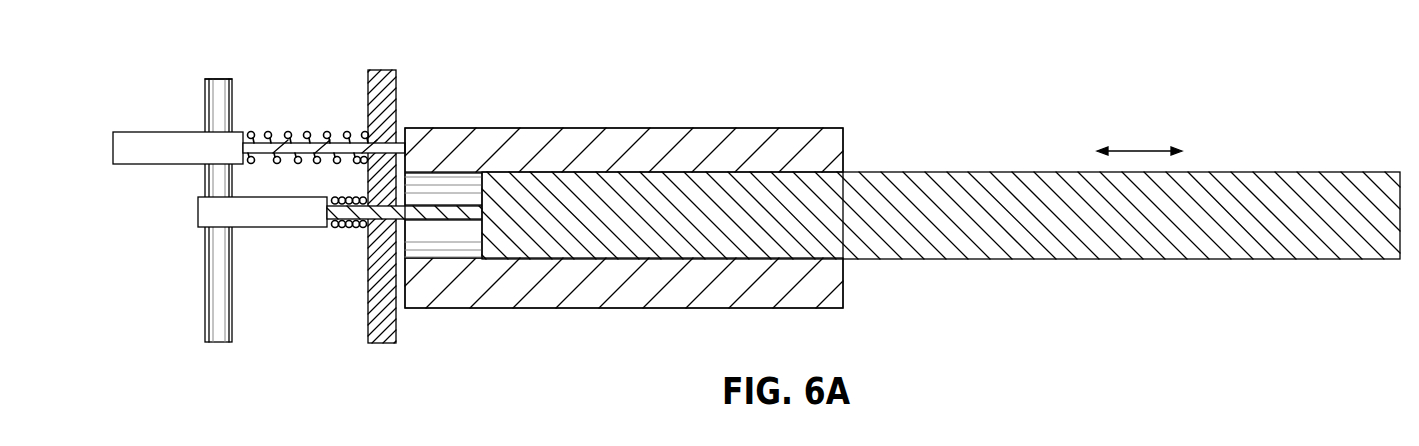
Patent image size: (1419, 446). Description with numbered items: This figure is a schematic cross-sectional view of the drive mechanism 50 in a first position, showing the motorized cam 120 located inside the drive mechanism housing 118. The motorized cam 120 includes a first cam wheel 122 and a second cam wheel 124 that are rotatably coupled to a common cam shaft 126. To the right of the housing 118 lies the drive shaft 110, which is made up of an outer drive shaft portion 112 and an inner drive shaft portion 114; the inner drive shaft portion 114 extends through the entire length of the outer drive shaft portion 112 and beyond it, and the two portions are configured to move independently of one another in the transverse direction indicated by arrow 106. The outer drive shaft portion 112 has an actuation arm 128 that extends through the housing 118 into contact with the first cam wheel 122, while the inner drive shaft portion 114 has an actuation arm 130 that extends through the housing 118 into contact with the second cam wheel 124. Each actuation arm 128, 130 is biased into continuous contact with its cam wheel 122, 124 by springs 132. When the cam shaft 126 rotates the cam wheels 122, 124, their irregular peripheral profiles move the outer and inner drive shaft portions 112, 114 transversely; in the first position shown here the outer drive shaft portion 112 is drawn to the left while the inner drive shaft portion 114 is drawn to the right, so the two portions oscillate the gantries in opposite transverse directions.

The drive mechanism 50 is at (876, 122).
The arrow indicating transverse direction 106 is at (1142, 151).
The drive shaft 110 is at (624, 193).
The outer drive shaft portion 112 is at (705, 135).
The inner drive shaft portion 114 is at (987, 178).
The drive mechanism housing 118 is at (396, 78).
The motorized cam 120 is at (196, 72).
The first cam wheel 122 is at (155, 165).
The second cam wheel 124 is at (272, 229).
The cam shaft 126 is at (232, 312).
The actuation arm 128 is at (322, 143).
The actuation arm 130 is at (432, 213).
The springs 132 is at (267, 131).